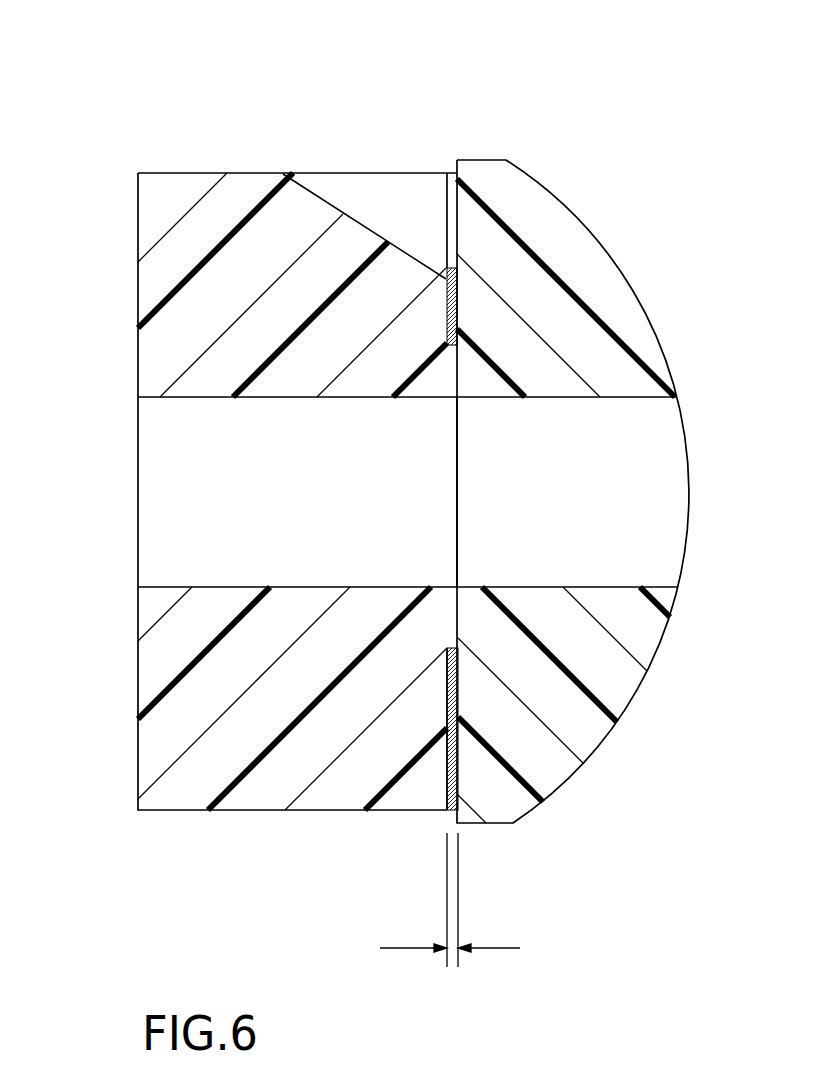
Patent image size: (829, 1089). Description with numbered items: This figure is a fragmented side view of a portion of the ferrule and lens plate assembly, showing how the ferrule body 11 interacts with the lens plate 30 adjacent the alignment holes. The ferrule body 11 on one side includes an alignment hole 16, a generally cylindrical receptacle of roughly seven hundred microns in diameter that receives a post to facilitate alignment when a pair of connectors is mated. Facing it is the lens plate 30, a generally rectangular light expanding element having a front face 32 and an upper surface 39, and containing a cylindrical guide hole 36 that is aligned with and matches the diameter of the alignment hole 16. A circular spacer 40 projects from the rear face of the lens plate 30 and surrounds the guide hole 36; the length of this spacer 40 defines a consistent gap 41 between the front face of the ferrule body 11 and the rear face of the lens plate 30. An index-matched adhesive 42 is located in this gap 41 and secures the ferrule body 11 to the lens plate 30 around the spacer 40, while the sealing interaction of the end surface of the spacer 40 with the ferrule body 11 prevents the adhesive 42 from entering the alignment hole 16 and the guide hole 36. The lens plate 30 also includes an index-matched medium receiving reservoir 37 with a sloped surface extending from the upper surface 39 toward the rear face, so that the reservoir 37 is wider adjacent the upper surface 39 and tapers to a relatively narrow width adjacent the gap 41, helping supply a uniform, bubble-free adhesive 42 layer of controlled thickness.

The ferrule body 11 is at (527, 215).
The alignment hole 16 is at (600, 398).
The lens plate 30 is at (138, 240).
The front face 32 is at (138, 355).
The guide hole 36 is at (205, 398).
The index-matched medium receiving reservoir 37 is at (374, 213).
The upper surface 39 is at (173, 173).
The spacer 40 is at (440, 377).
The gap 41 is at (450, 967).
The index-matched adhesive 42 is at (460, 300).